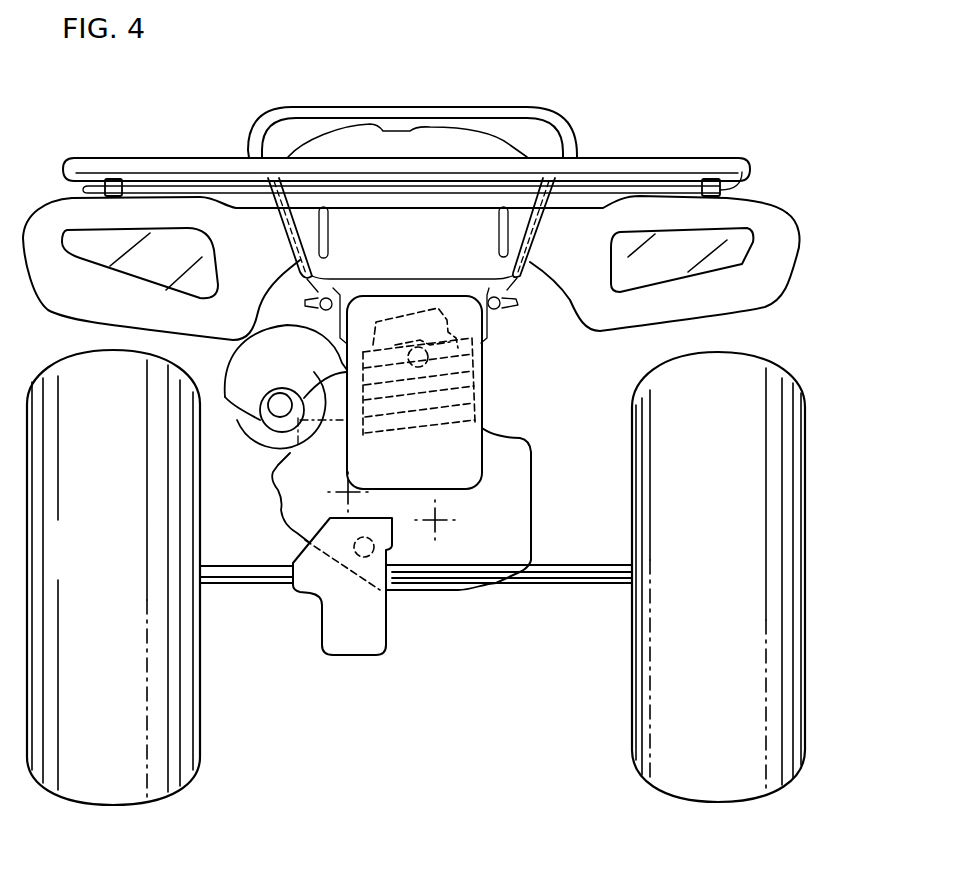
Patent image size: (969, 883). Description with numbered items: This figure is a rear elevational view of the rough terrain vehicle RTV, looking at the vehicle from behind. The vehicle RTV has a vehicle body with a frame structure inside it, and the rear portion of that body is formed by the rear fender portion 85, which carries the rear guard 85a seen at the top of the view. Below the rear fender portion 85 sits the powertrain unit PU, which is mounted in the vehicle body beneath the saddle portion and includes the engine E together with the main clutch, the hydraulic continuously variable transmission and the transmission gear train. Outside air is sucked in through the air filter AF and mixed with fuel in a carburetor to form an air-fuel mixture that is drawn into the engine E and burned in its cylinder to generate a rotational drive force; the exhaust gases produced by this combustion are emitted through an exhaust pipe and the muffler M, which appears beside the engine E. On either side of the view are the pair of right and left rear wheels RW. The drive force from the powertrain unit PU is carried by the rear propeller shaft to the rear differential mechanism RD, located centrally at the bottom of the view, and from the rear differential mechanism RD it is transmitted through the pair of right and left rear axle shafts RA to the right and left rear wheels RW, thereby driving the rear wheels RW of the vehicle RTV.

The rear fender portion 85 is at (488, 197).
The rear guard 85a is at (683, 163).
The rough terrain vehicle RTV is at (793, 173).
The rear wheels RW is at (745, 378).
The engine E is at (460, 368).
The powertrain unit PU is at (518, 433).
The air filter AF is at (462, 472).
The muffler M is at (262, 432).
The rear axle shafts RA is at (238, 585).
The rear differential mechanism RD is at (372, 640).